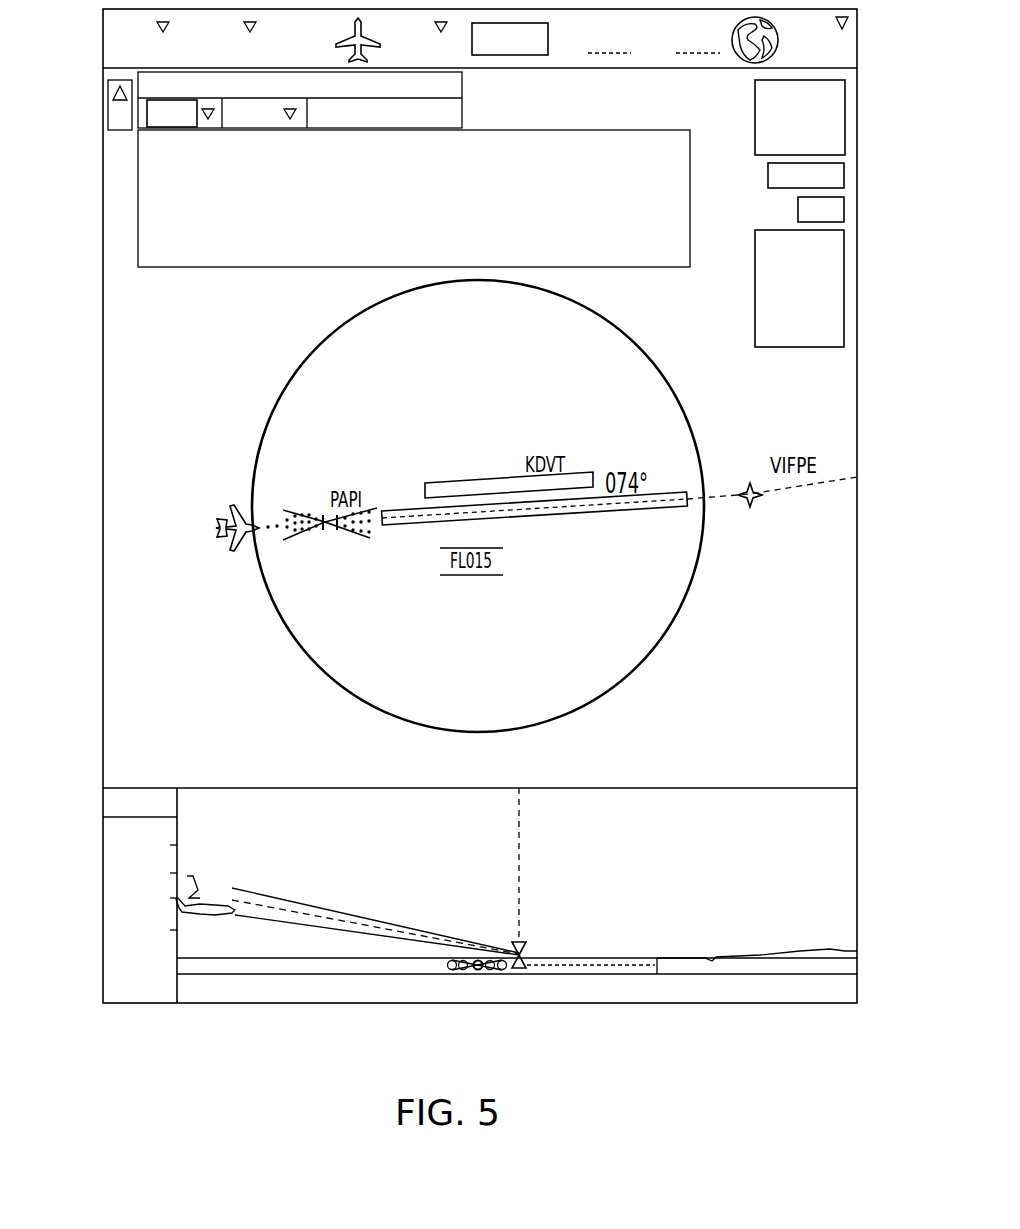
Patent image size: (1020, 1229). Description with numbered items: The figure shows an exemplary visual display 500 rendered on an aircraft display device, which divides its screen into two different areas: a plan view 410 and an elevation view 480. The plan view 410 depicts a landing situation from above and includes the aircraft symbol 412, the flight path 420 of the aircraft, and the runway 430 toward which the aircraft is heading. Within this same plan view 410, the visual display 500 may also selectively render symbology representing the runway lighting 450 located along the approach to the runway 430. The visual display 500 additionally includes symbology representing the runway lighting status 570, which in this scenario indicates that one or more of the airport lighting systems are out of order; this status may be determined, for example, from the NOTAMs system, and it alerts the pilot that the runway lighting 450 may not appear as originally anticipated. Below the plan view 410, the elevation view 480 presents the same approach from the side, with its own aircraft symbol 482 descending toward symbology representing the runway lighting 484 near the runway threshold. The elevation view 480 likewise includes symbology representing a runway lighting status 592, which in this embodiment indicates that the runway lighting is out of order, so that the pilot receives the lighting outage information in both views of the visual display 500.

The visual display 500 is at (84, 183).
The plan view 410 is at (115, 327).
The aircraft symbol 412 is at (232, 505).
The flight path 420 is at (268, 532).
The runway lighting 450 is at (333, 532).
The runway lighting status 570 is at (370, 508).
The runway 430 is at (568, 513).
The elevation view 480 is at (103, 937).
The aircraft symbol 482 is at (205, 918).
The runway lighting status 592 is at (458, 975).
The runway lighting 484 is at (505, 975).